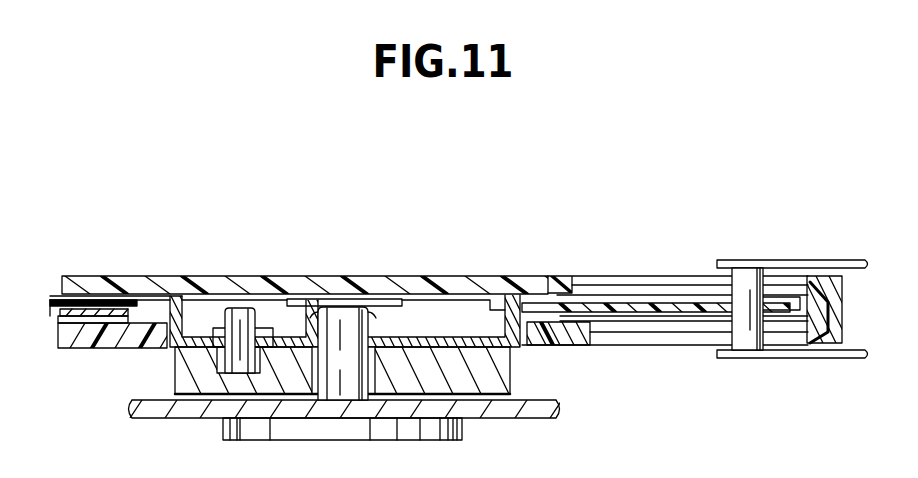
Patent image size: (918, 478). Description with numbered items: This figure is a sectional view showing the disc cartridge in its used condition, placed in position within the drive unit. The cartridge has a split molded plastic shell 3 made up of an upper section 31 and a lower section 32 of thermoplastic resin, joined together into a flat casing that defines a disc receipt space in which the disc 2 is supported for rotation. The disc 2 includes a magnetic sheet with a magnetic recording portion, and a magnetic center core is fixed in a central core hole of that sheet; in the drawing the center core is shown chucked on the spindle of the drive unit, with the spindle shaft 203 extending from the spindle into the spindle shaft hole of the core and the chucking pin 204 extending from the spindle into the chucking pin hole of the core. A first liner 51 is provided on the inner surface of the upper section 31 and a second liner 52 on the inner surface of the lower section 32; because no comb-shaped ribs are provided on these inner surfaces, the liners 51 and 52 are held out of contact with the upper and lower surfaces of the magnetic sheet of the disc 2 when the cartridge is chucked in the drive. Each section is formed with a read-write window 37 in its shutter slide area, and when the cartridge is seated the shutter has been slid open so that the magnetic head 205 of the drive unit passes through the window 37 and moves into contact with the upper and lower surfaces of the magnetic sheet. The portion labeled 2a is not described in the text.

The disc 2 is at (140, 283).
The recess of base plate 2a is at (248, 278).
The shell 3 is at (136, 193).
The upper section 31 is at (52, 300).
The lower section 32 is at (63, 340).
The first liner 51 is at (97, 300).
The second liner 52 is at (643, 323).
The read-write window 37 is at (690, 285).
The spindle shaft 203 is at (345, 327).
The chucking pin 204 is at (240, 308).
The magnetic head 205 is at (750, 275).